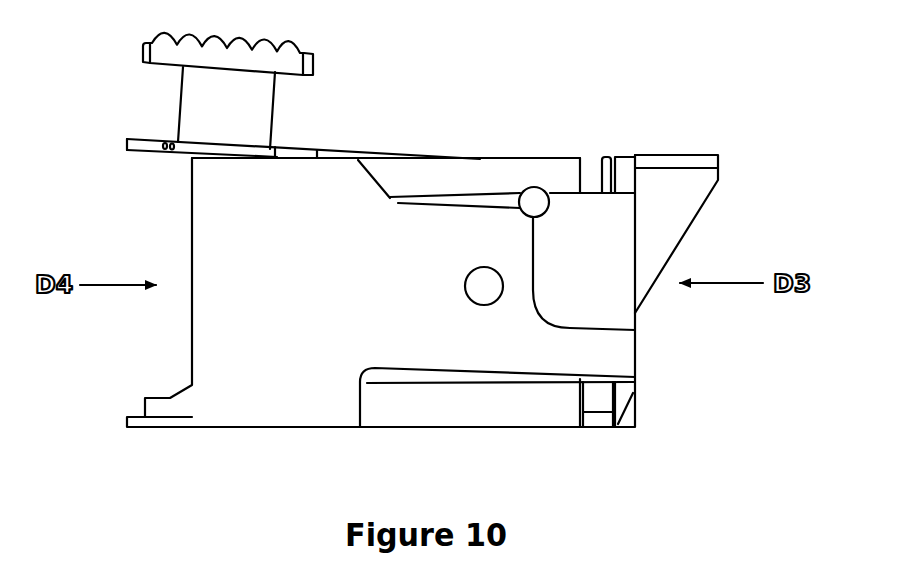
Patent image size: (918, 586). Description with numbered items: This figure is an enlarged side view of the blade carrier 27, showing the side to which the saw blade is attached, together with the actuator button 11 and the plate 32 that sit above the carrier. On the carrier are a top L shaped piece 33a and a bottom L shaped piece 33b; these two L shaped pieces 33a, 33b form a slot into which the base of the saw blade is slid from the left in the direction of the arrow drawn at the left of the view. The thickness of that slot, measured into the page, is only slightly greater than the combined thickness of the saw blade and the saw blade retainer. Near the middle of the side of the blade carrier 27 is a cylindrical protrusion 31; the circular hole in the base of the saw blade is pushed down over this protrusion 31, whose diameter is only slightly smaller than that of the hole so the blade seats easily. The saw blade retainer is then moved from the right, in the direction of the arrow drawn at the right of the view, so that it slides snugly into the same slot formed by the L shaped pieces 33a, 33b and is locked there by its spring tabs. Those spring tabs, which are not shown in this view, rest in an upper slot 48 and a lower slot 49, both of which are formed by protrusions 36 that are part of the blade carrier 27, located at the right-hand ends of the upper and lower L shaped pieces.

The gear 11 is at (318, 47).
The plate 32 is at (313, 141).
The blade carrier 27 is at (323, 312).
The top L shaped piece 33a is at (485, 170).
The bottom L shaped piece 33b is at (441, 416).
The upper slot 48 is at (590, 156).
The protrusions 36 is at (623, 165).
The cylindrical protrusion 31 is at (461, 268).
The lower slot 49 is at (596, 405).